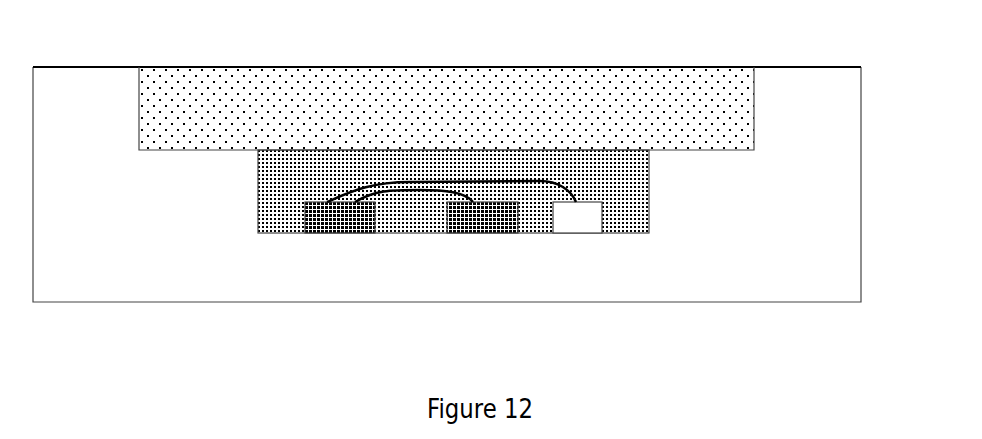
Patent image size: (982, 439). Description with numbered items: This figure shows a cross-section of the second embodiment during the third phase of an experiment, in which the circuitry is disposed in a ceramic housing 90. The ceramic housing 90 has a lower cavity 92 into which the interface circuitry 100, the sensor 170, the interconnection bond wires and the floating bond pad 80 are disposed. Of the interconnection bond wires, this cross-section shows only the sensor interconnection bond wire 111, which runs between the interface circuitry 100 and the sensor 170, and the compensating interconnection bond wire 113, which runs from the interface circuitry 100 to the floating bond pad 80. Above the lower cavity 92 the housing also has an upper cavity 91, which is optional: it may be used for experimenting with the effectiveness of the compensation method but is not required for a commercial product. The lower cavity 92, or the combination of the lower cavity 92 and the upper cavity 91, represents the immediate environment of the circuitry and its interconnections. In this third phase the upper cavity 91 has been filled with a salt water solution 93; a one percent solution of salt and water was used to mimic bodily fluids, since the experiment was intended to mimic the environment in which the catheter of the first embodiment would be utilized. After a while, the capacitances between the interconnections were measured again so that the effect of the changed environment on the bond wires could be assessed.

The ceramic housing 90 is at (743, 262).
The upper cavity 91 is at (672, 107).
The salt water solution 93 is at (190, 120).
The lower cavity 92 is at (278, 198).
The interface circuitry 100 is at (330, 228).
The sensor 170 is at (468, 226).
The floating bond pad 80 is at (578, 220).
The sensor interconnection bond wire 111 is at (430, 196).
The compensating interconnection bond wire 113 is at (548, 184).